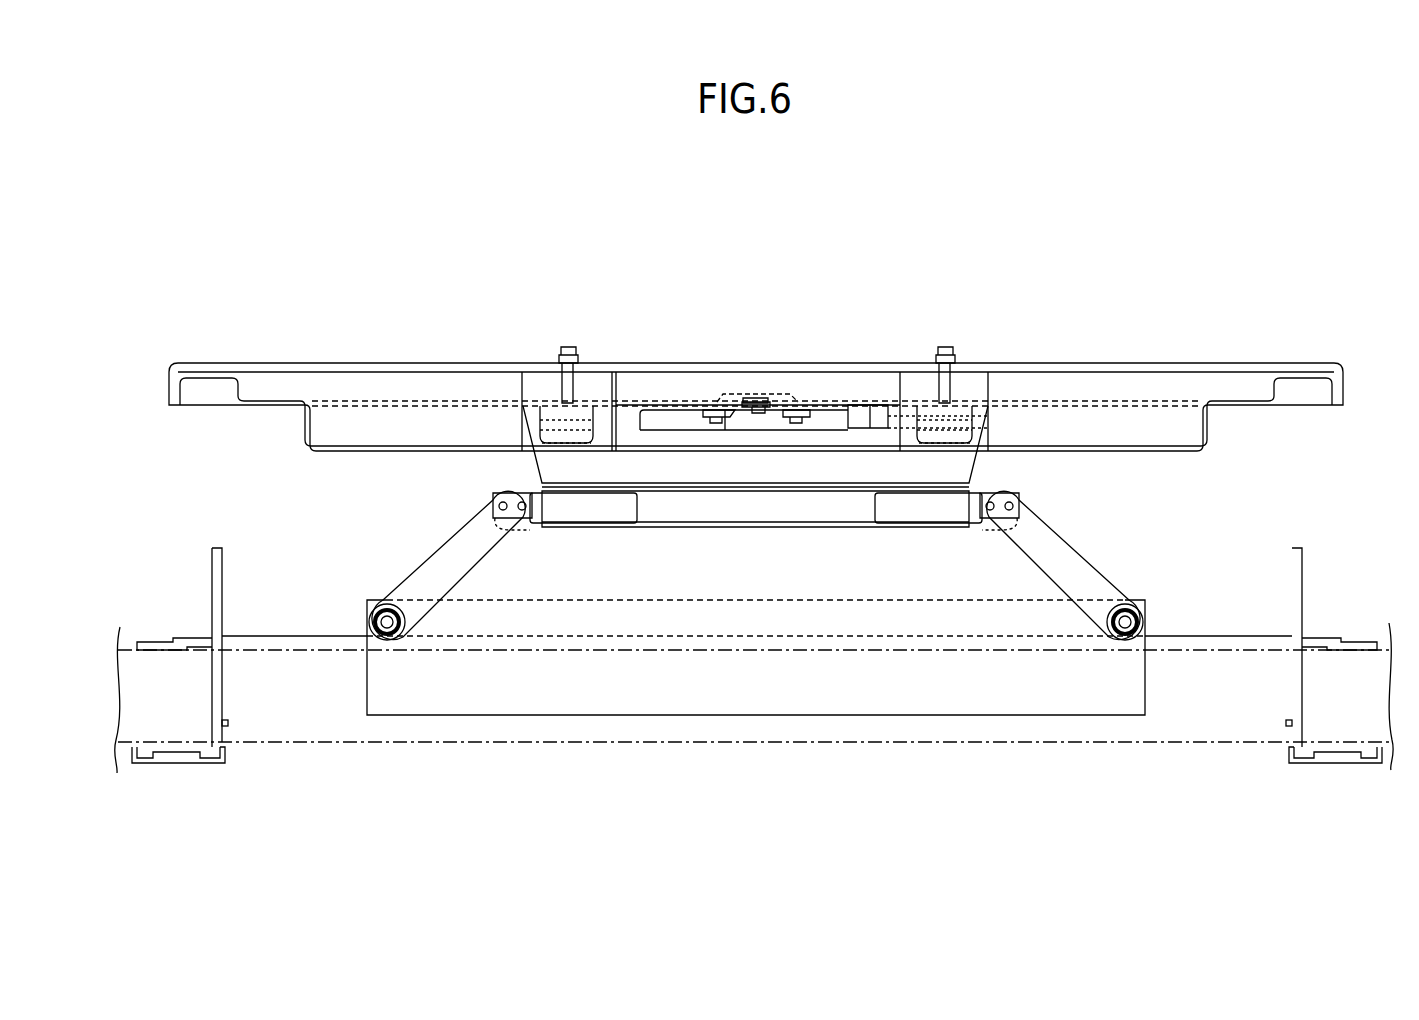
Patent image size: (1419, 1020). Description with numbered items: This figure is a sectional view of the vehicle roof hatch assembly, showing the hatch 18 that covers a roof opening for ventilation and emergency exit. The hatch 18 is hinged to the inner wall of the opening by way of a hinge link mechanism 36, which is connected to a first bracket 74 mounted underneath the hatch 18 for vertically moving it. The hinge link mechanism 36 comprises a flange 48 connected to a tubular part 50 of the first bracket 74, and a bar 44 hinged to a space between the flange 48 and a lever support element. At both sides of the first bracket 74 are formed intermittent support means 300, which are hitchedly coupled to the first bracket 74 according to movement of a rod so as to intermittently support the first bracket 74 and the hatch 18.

The hatch 18 is at (1269, 360).
The intermittent support means 300 is at (617, 397).
The first bracket 74 is at (985, 468).
The tubular part 50 is at (762, 510).
The flange 48 is at (585, 510).
The bar 44 is at (458, 545).
The hinge link mechanism 36 is at (368, 583).